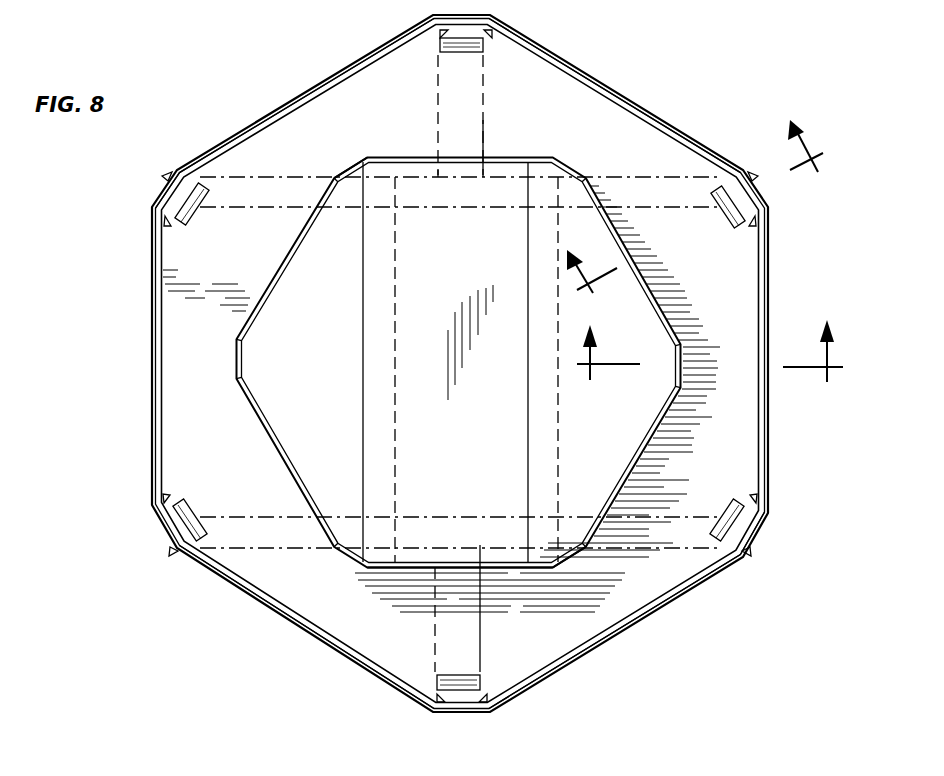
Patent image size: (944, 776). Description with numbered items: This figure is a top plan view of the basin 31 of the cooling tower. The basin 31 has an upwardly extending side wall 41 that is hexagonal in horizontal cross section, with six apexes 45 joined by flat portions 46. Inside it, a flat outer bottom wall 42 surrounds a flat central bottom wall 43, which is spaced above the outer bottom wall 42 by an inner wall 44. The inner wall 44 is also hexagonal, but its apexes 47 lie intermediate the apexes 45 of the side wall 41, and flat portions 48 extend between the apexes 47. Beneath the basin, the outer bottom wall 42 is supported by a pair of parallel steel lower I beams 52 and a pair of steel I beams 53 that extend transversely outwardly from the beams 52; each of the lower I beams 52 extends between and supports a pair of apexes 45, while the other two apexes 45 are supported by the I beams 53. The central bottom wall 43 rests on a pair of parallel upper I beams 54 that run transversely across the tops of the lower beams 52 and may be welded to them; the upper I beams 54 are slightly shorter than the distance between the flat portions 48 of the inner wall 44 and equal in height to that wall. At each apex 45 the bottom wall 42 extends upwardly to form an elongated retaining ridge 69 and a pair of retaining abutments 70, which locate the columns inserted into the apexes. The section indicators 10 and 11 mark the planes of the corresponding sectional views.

The basin 31 is at (152, 376).
The side wall 41 is at (655, 610).
The outer bottom wall 42 is at (540, 100).
The central bottom wall 43 is at (302, 278).
The inner wall 44 is at (420, 572).
The apexes 45 is at (164, 186).
The flat portions 46 is at (285, 108).
The apexes 47 is at (343, 172).
The flat portions 48 is at (654, 285).
The lower I beams 52 is at (660, 178).
The I beams 53 is at (483, 136).
The upper I beams 54 is at (362, 437).
The retaining ridge 69 is at (462, 53).
The retaining abutments 70 is at (723, 178).
The section line 10 is at (711, 372).
The section line 11 is at (703, 222).